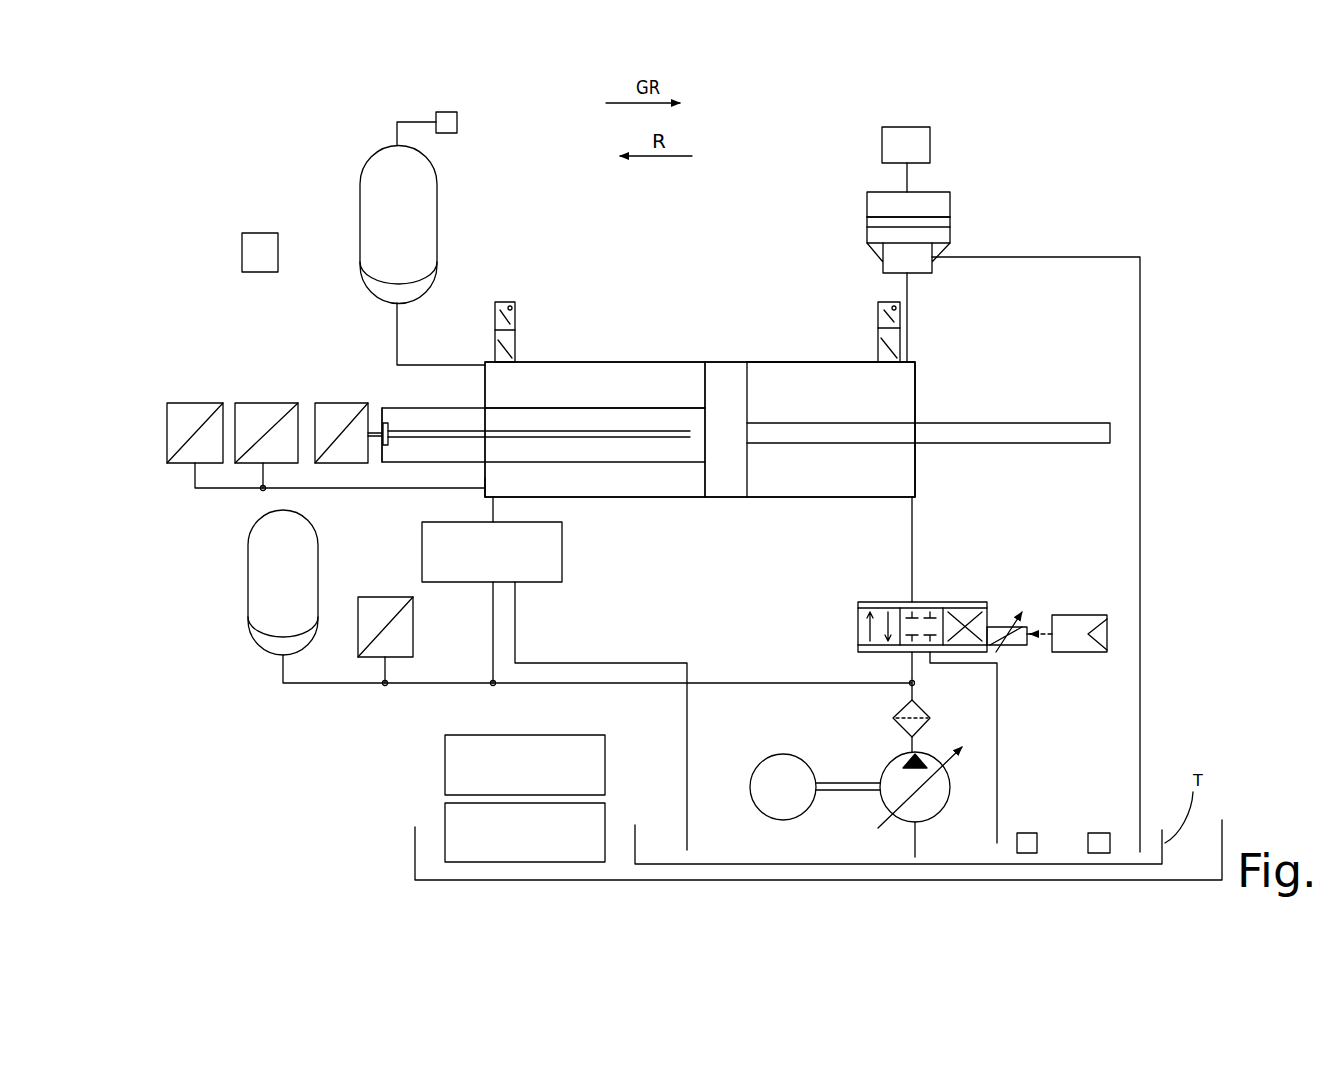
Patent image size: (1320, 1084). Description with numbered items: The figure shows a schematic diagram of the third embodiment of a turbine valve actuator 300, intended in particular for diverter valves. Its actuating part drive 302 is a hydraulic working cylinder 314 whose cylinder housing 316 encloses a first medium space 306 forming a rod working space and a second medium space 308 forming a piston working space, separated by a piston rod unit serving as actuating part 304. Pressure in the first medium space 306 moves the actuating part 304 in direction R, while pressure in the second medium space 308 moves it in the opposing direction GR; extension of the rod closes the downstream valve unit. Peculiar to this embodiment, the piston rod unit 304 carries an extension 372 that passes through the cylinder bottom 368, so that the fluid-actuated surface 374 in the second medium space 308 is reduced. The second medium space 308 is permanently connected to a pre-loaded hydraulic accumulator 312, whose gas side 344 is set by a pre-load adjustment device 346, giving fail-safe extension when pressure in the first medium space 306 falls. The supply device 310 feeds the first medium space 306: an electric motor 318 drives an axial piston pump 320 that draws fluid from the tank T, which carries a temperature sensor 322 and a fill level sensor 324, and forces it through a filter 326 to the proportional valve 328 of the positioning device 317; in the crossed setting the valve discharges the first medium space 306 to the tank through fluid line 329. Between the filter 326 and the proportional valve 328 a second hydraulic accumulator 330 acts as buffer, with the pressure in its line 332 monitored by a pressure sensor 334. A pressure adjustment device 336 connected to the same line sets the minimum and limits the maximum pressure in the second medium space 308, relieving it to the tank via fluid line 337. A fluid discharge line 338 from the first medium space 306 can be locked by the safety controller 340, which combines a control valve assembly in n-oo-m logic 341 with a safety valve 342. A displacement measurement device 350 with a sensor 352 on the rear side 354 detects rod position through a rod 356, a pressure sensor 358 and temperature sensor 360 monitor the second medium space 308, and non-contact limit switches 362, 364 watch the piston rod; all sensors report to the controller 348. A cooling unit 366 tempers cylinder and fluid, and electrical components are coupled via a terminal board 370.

The turbine valve actuator 300 is at (1045, 198).
The actuating part drive 302 is at (642, 350).
The actuating part 304 is at (726, 380).
The first medium space 306 is at (788, 380).
The second medium space 308 is at (590, 378).
The supply device 310 is at (1050, 746).
The hydraulic accumulator 312 is at (437, 197).
The hydraulic working cylinder 314 is at (668, 497).
The cylinder housing 316 is at (817, 497).
The positioning device 317 is at (995, 595).
The electric motor 318 is at (770, 756).
The axial piston pump 320 is at (953, 780).
The temperature sensor 322 is at (1028, 833).
The fill level sensor 324 is at (1099, 833).
The filter 326 is at (926, 707).
The proportional valve 328 is at (942, 603).
The fluid line 329 is at (998, 706).
The second hydraulic accumulator 330 is at (248, 578).
The line 332 is at (290, 688).
The pressure sensor 334 is at (365, 597).
The pressure adjustment device 336 is at (562, 540).
The fluid line 337 is at (605, 663).
The fluid discharge line 338 is at (985, 258).
The safety controller 340 is at (962, 205).
The control valve assembly in n-oo-m logic 341 is at (908, 127).
The safety valve 342 is at (866, 203).
The gas side 344 is at (378, 193).
The pre-load adjustment device 346 is at (457, 118).
The controller 348 is at (258, 233).
The displacement measurement device 350 is at (376, 392).
The sensor 352 is at (328, 403).
The rear side 354 is at (485, 478).
The rod 356 is at (535, 434).
The pressure sensor 358 is at (180, 403).
The temperature sensor 360 is at (258, 403).
The non-contact limit switch 362 is at (502, 300).
The non-contact limit switch 364 is at (885, 300).
The cooling unit 366 is at (445, 815).
The cylinder bottom 368 is at (487, 397).
The terminal board 370 is at (445, 752).
The extension 372 is at (568, 408).
The surface 374 is at (705, 392).